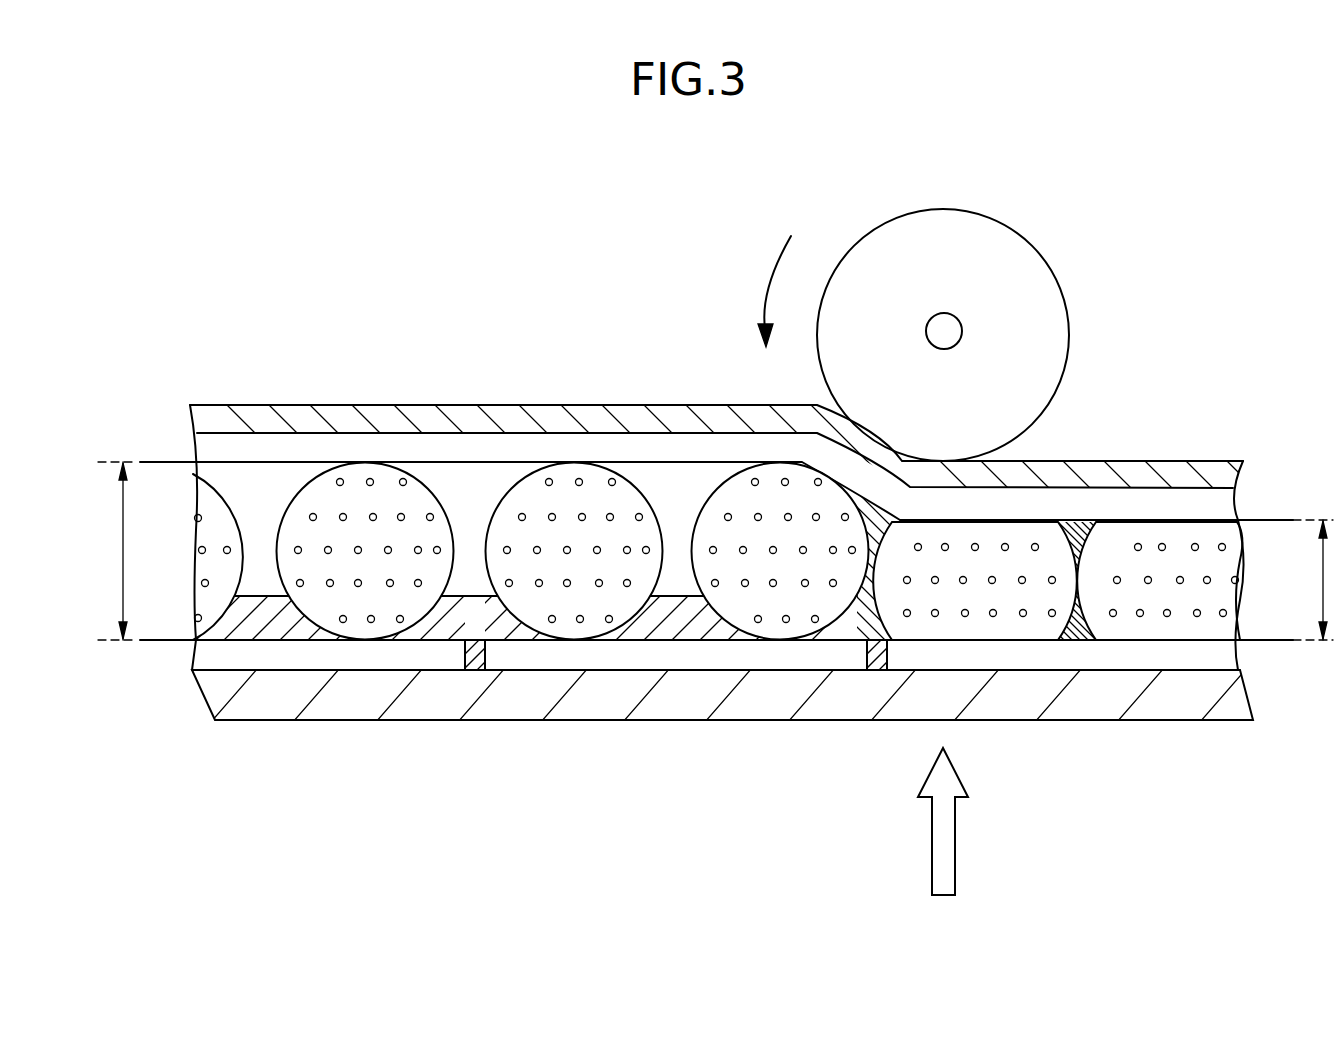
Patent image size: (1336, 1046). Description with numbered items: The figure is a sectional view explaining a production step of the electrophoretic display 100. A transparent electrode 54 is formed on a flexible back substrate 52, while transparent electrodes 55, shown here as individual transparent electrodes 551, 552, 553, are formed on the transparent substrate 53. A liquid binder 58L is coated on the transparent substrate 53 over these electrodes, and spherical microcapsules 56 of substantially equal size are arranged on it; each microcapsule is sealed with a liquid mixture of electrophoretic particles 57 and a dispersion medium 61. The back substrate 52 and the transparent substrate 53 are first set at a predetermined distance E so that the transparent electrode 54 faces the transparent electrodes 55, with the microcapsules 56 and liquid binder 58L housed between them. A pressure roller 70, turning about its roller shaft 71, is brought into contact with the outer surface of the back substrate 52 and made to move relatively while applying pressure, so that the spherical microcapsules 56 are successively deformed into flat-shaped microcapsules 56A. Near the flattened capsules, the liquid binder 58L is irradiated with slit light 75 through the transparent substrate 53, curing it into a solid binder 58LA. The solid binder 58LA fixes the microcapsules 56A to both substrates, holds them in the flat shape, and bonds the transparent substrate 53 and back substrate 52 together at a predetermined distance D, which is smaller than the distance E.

The electrophoretic display 100 is at (540, 255).
The back substrate 52 is at (260, 417).
The transparent substrate 53 is at (525, 697).
The transparent electrode 54 is at (355, 450).
The transparent electrodes 55 is at (718, 720).
The transparent electrode 551 is at (1175, 660).
The transparent electrode 552 is at (840, 662).
The transparent electrode 553 is at (360, 663).
The spherical microcapsules 56 is at (717, 561).
The flat-shaped microcapsules 56A is at (1078, 520).
The electrophoretic particles 57 is at (597, 595).
The liquid binder 58L is at (275, 628).
The solid binder 58LA is at (1092, 643).
The dispersion medium 61 is at (535, 605).
The pressure roller 70 is at (990, 240).
The roller shaft 71 is at (950, 327).
The slit light 75 is at (955, 860).
The predetermined distance E is at (125, 551).
The predetermined distance D is at (1324, 580).